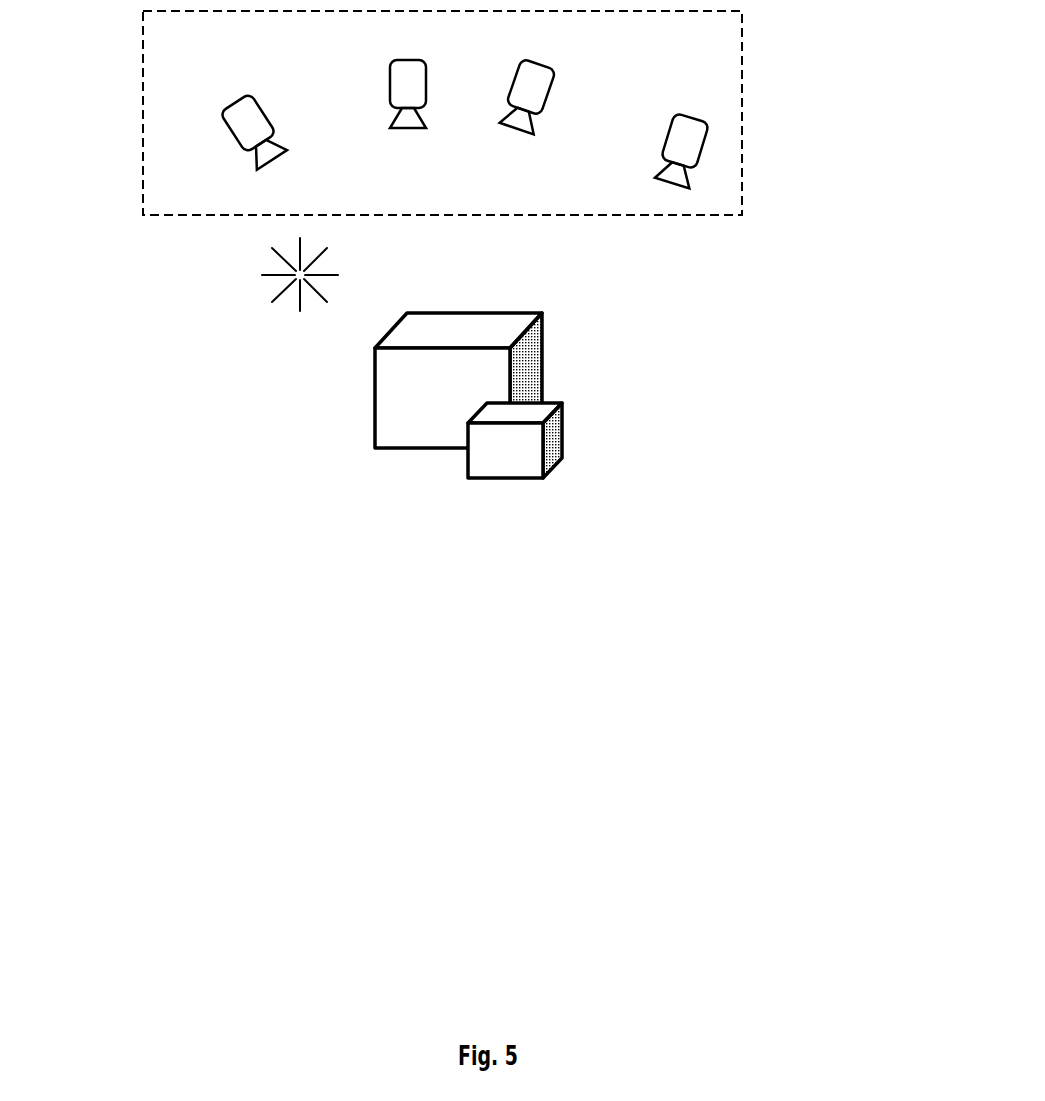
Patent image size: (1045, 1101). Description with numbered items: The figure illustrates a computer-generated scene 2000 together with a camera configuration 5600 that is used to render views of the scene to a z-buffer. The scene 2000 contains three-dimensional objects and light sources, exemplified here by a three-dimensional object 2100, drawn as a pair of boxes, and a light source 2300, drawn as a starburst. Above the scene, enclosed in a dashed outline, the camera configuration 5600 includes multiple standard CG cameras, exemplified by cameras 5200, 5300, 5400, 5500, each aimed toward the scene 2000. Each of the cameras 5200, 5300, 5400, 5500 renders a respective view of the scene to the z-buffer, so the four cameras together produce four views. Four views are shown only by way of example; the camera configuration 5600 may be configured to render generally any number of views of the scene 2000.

The CG scene 2000 is at (760, 306).
The 3D object 2100 is at (550, 305).
The light source 2300 is at (282, 305).
The camera 5200 is at (222, 130).
The camera 5300 is at (385, 88).
The camera 5400 is at (508, 78).
The camera 5500 is at (670, 125).
The camera configuration 5600 is at (143, 120).